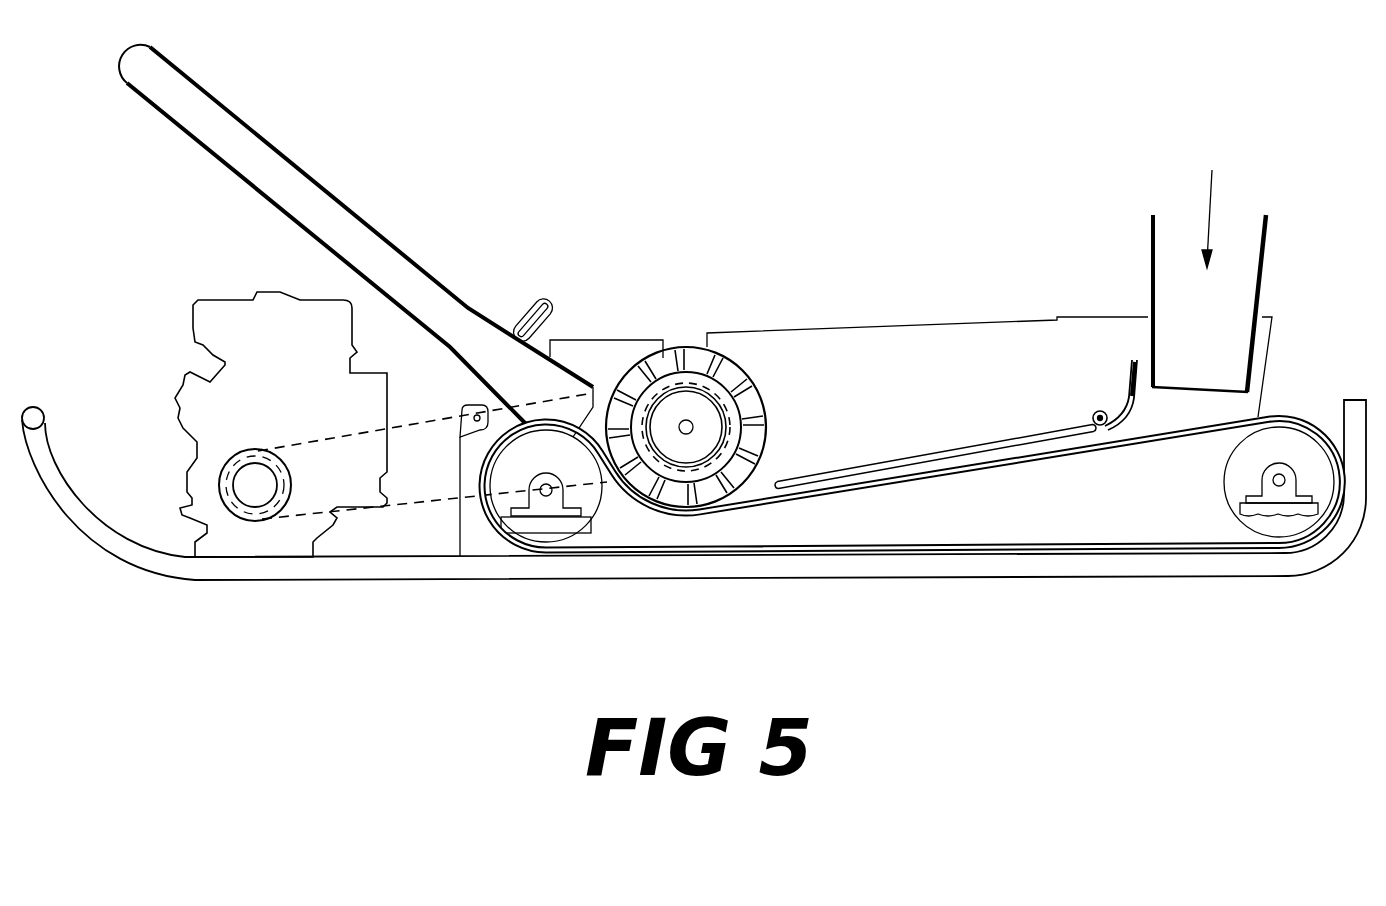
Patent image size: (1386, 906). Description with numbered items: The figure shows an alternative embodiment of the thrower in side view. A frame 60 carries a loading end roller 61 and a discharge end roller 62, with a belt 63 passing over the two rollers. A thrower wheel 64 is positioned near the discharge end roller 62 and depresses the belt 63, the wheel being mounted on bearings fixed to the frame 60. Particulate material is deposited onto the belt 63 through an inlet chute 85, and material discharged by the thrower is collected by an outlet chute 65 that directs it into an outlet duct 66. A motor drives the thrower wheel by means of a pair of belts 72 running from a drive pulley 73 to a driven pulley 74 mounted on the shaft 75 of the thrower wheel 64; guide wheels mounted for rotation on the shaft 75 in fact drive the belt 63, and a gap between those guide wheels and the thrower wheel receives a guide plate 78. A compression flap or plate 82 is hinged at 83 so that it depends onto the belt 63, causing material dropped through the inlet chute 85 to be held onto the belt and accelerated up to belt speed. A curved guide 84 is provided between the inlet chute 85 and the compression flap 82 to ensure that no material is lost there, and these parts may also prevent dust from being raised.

The frame 60 is at (950, 567).
The loading end roller 61 is at (1282, 437).
The discharge end roller 62 is at (545, 545).
The belt 63 is at (1080, 457).
The thrower wheel 64 is at (685, 370).
The outlet chute 65 is at (487, 335).
The outlet duct 66 is at (300, 185).
The belts 72 is at (419, 423).
The drive pulley 73 is at (242, 485).
The driven pulley 74 is at (698, 398).
The shaft 75 is at (686, 427).
The guide plate 78 is at (878, 340).
The compression flap 82 is at (1033, 428).
The hinge 83 is at (1100, 411).
The curved guide 84 is at (1134, 362).
The inlet chute 85 is at (1244, 268).